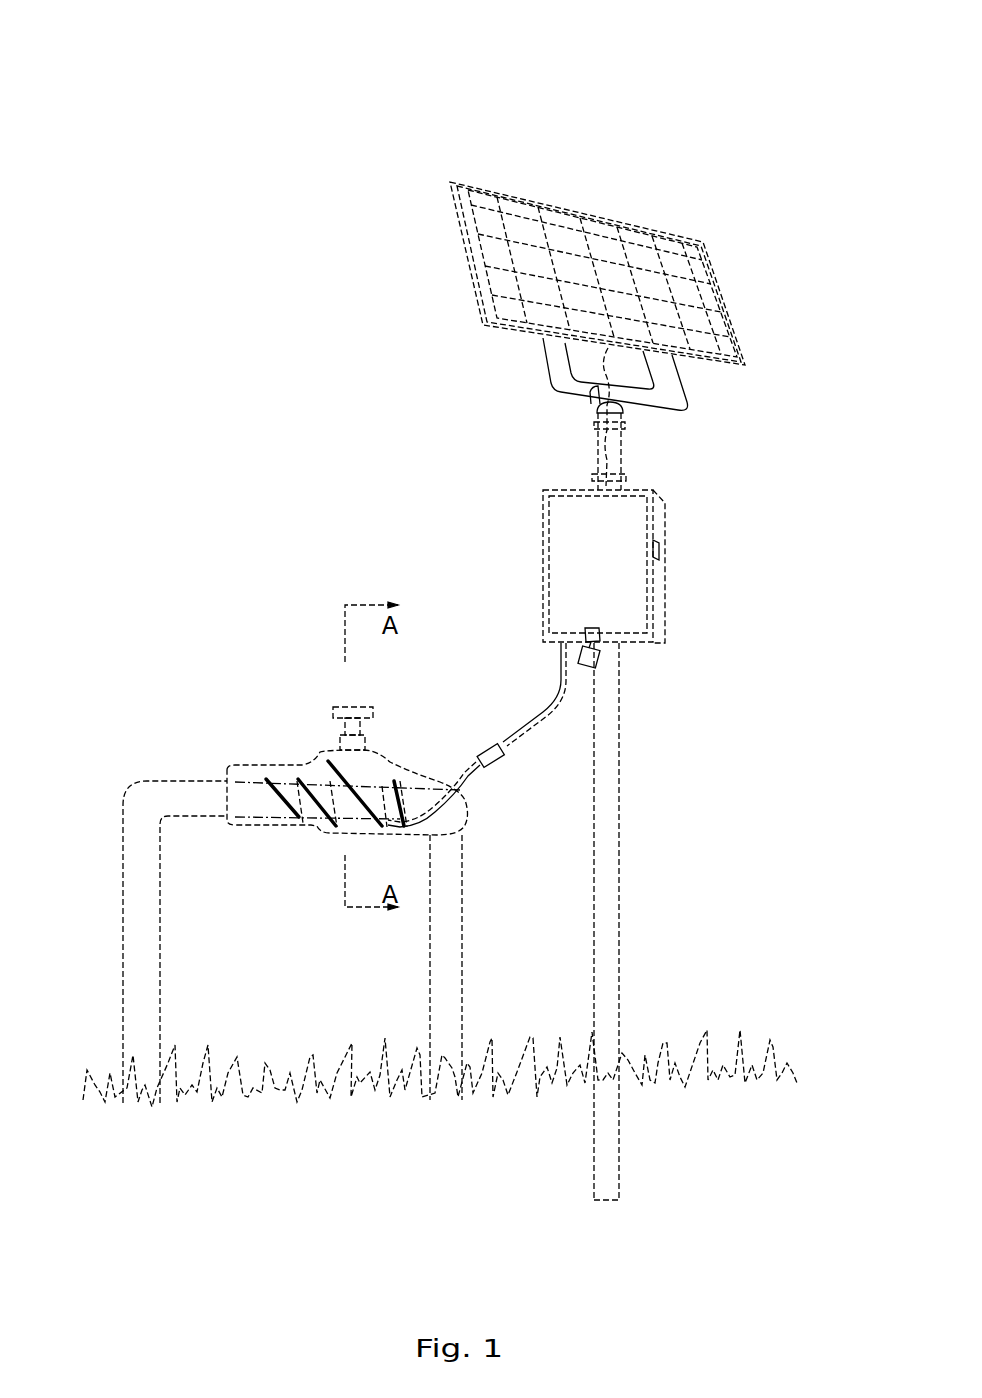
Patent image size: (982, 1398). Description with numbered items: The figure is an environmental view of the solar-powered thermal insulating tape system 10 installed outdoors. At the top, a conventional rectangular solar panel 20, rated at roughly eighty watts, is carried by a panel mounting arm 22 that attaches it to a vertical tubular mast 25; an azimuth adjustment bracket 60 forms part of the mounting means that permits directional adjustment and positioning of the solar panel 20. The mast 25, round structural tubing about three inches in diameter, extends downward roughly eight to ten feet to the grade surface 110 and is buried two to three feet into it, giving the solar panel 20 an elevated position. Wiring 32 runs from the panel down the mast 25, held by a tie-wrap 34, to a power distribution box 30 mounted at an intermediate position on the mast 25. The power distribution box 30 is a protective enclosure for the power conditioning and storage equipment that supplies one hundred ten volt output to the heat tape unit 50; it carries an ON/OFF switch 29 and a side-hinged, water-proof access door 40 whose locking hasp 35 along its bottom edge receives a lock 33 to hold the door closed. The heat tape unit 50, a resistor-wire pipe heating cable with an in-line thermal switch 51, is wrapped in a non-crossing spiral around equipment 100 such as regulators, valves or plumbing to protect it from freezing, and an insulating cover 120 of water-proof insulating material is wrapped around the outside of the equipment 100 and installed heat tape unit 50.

The solar-powered thermal insulating tape 10 is at (100, 133).
The solar panel 20 is at (730, 312).
The panel mounting arm 22 is at (558, 367).
The mast 25 is at (595, 482).
The ON/OFF switch 29 is at (660, 552).
The power distribution box 30 is at (665, 575).
The wiring 32 is at (622, 450).
The lock 33 is at (598, 662).
The tie-wrap 34 is at (593, 475).
The hasp 35 is at (588, 632).
The access door 40 is at (622, 600).
The heat tape unit 50 is at (353, 797).
The thermal switch 51 is at (487, 745).
The azimuth adjustment bracket 60 is at (598, 407).
The equipment 100 is at (174, 783).
The grade surface 110 is at (745, 1060).
The insulating cover 120 is at (322, 835).